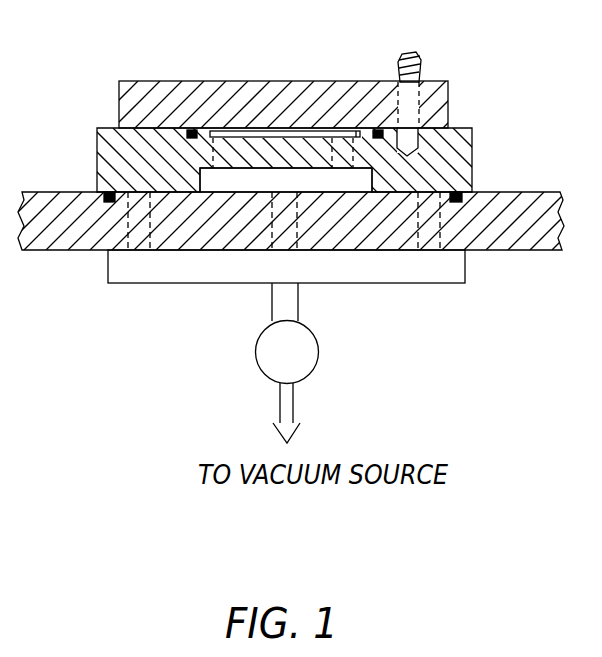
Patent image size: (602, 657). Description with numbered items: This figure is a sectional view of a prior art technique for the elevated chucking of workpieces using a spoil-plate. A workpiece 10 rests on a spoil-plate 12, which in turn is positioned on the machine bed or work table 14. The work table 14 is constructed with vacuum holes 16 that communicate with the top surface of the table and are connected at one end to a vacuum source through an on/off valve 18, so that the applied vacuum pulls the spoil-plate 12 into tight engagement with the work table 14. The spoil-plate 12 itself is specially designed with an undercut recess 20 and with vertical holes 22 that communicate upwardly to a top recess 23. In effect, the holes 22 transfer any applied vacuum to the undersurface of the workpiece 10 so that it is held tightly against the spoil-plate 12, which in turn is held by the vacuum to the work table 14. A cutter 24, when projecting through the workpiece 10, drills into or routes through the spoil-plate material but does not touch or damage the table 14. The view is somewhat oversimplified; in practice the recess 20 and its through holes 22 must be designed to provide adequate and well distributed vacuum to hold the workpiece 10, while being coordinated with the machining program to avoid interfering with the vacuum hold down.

The workpiece 10 is at (448, 81).
The spoil-plate 12 is at (472, 128).
The work table 14 is at (532, 192).
The vacuum holes 16 is at (140, 243).
The on/off valve 18 is at (318, 345).
The undercut recess 20 is at (212, 178).
The vertical holes 22 is at (320, 131).
The top recess 23 is at (347, 134).
The cutter 24 is at (410, 53).